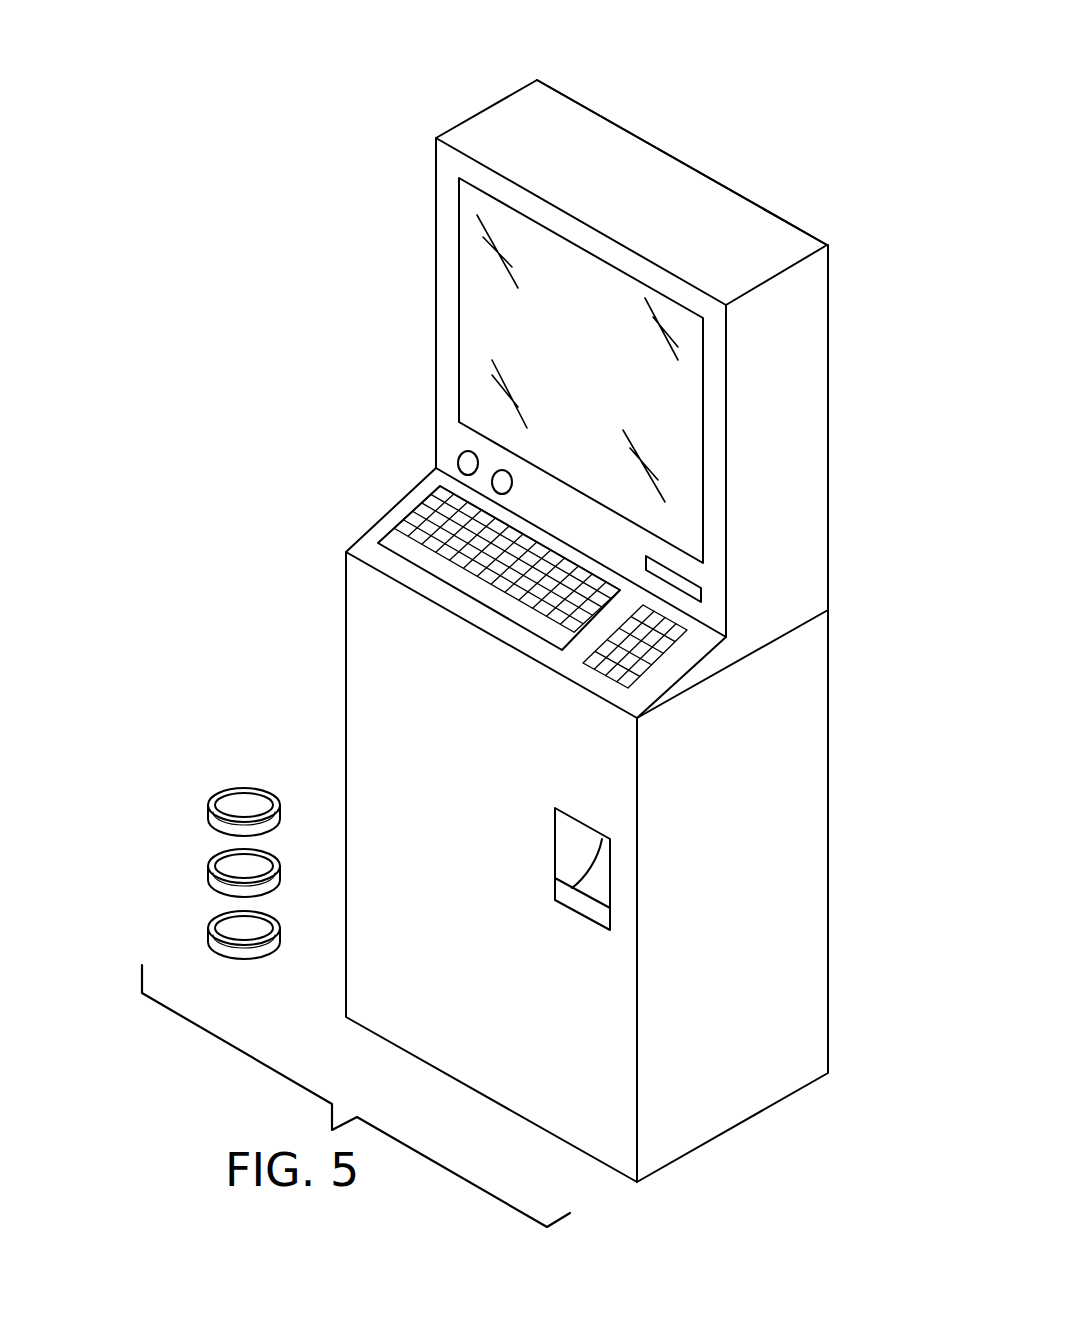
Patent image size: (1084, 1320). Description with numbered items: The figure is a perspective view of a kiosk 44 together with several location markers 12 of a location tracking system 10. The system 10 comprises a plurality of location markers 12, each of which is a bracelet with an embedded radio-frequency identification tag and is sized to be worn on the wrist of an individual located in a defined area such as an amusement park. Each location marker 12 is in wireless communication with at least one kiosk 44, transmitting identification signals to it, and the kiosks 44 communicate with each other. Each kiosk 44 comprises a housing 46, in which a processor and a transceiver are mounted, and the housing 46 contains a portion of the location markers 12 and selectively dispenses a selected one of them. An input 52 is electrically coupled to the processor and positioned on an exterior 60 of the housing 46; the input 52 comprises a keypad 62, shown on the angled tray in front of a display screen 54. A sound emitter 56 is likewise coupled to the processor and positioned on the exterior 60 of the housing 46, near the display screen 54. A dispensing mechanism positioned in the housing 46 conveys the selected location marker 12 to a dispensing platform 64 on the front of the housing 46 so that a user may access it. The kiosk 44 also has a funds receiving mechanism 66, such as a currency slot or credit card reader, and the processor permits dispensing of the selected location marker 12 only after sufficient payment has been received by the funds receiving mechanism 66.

The location tracking system 10 is at (205, 142).
The location marker 12 is at (196, 767).
The kiosk 44 is at (685, 116).
The housing 46 is at (737, 230).
The input 52 is at (372, 505).
The display screen 54 is at (497, 307).
The sound emitter 56 is at (468, 460).
The exterior 60 is at (713, 400).
The keypad 62 is at (457, 550).
The dispensing platform 64 is at (592, 887).
The funds receiving mechanism 66 is at (703, 587).